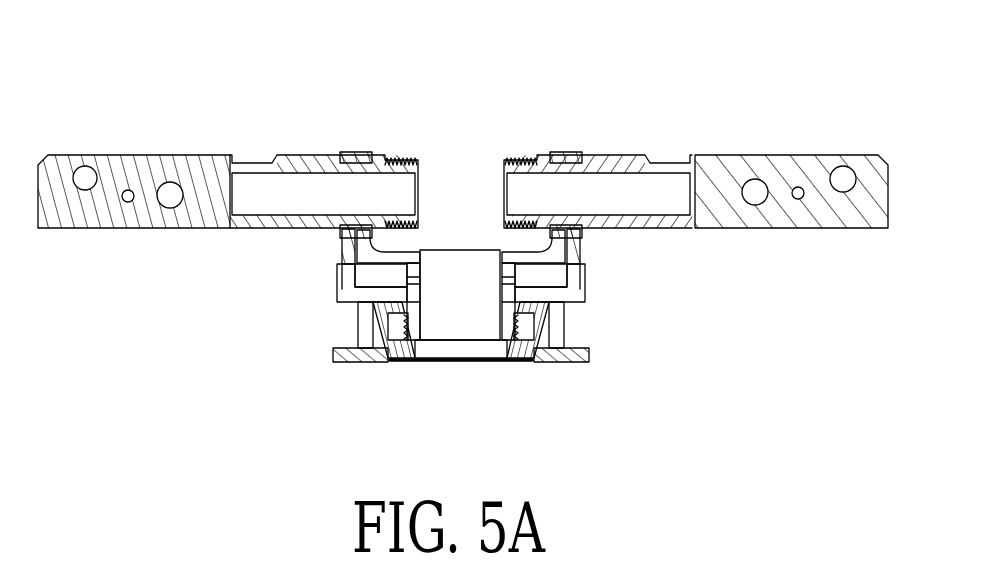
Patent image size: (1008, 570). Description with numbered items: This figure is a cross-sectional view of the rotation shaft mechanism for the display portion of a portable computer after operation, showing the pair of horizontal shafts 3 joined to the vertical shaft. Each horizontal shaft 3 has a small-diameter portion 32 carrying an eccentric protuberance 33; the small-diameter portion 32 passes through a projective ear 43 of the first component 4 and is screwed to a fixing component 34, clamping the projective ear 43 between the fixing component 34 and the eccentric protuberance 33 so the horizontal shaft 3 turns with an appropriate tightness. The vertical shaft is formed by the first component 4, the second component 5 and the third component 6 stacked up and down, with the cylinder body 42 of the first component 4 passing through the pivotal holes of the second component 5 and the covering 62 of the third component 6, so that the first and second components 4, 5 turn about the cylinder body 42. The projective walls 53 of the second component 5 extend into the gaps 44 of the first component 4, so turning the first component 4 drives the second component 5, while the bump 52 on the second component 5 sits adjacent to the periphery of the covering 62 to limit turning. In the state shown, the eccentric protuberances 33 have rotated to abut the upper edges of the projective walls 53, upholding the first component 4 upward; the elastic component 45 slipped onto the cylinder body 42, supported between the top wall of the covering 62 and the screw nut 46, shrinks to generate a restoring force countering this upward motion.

The horizontal shaft 3 is at (695, 152).
The small-diameter portion 32 is at (363, 153).
The eccentric protuberance 33 is at (341, 247).
The fixing component 34 is at (522, 153).
The projective ear 43 is at (563, 153).
The first component 4 is at (492, 248).
The cylinder body 42 is at (414, 364).
The gap 44 is at (577, 255).
The elastic component 45 is at (528, 318).
The screw nut 46 is at (522, 364).
The second component 5 is at (337, 300).
The bump 52 is at (372, 318).
The projective wall 53 is at (343, 278).
The third component 6 is at (345, 366).
The covering 62 is at (548, 346).